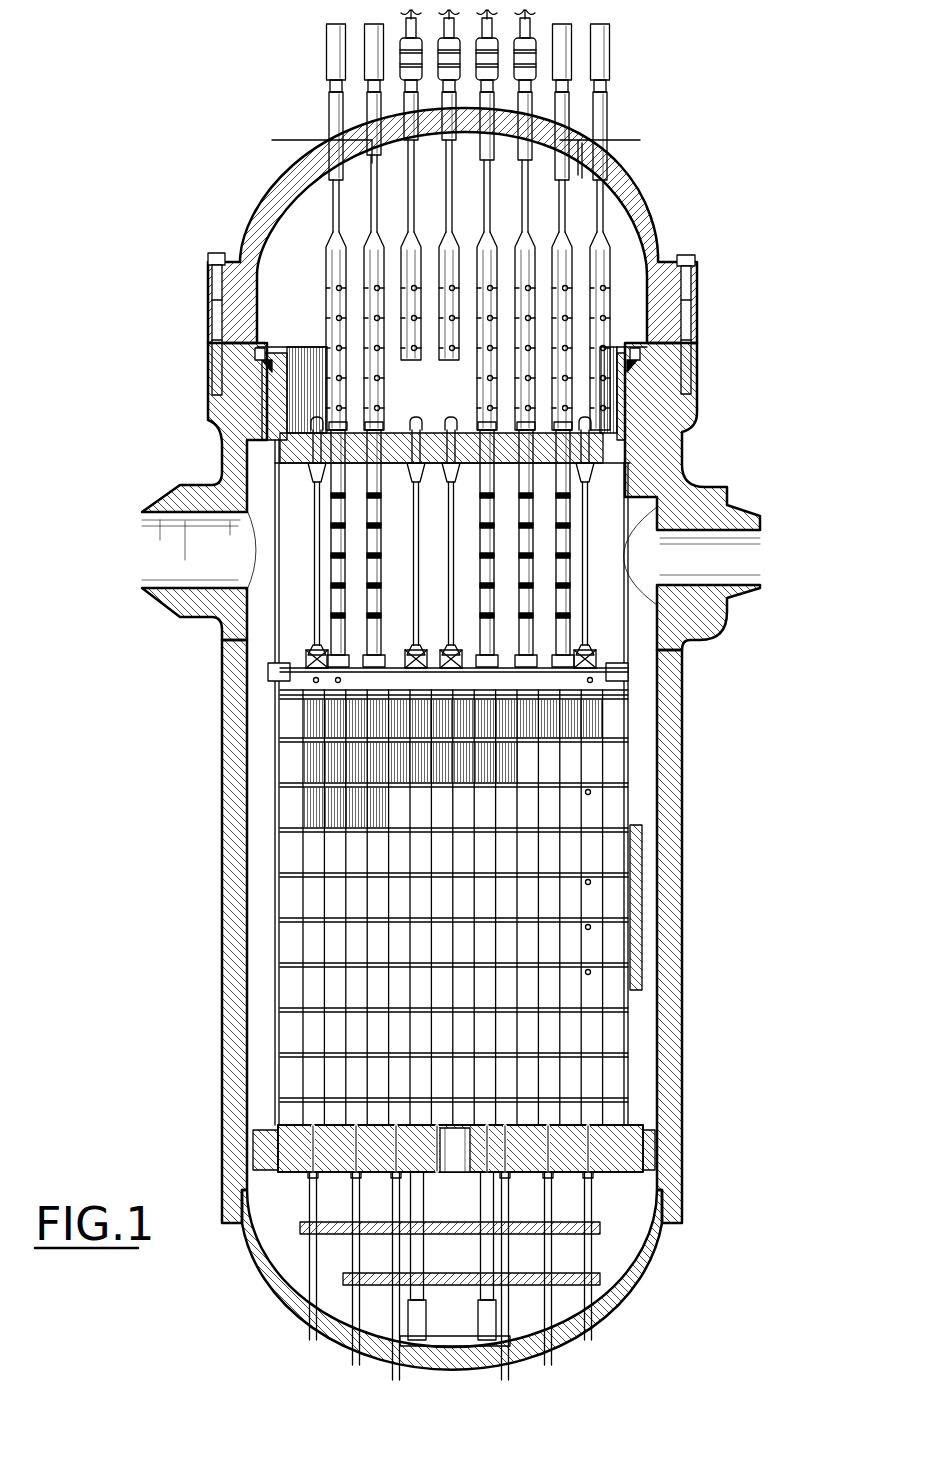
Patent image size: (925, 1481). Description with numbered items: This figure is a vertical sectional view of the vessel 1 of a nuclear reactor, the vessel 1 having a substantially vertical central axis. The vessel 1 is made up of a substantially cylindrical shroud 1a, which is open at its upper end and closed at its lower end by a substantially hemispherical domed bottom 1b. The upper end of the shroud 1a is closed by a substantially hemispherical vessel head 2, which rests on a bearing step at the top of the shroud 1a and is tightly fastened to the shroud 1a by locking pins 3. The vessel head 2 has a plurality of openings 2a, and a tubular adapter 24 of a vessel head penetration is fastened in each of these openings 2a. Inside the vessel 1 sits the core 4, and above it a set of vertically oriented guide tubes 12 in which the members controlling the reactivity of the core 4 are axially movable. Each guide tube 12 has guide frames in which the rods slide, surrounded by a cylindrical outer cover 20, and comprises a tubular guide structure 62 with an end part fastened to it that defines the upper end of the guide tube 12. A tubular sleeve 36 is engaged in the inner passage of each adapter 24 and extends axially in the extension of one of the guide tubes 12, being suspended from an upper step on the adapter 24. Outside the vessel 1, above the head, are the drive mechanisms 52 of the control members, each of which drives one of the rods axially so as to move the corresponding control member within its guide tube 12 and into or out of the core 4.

The vessel 1 is at (755, 718).
The shroud 1a is at (670, 916).
The domed bottom 1b is at (636, 1268).
The vessel head 2 is at (650, 212).
The openings 2a is at (375, 195).
The locking pins 3 is at (213, 270).
The core 4 is at (580, 806).
The guide tubes 12 is at (358, 360).
The cylindrical outer cover 20 is at (560, 352).
The tubular adapter 24 is at (527, 133).
The tubular sleeve 36 is at (370, 190).
The drive mechanisms 52 is at (490, 62).
The tubular guide structure 62 is at (372, 262).